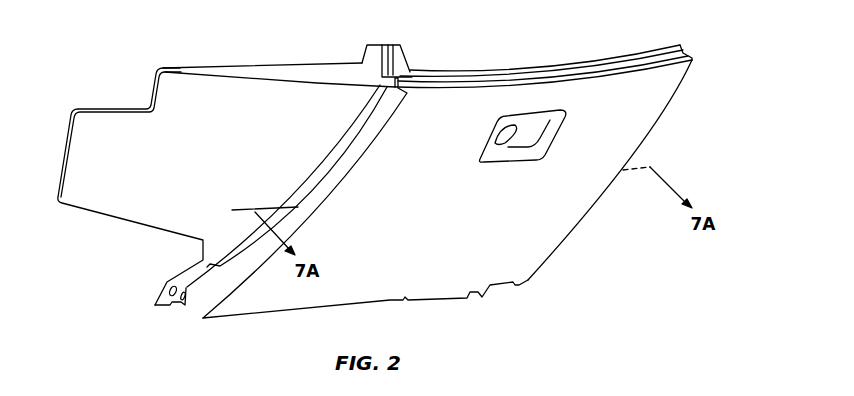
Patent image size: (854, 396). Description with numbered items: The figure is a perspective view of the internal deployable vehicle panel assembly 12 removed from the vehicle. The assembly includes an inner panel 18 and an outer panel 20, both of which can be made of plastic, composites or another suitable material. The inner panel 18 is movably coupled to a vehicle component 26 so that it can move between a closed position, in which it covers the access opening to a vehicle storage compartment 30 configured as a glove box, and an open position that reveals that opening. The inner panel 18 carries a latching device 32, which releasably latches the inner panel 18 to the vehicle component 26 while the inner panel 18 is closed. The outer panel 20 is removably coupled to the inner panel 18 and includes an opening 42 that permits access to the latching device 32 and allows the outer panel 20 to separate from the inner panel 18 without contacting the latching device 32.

The internal deployable vehicle panel assembly 12 is at (660, 156).
The inner panel 18 is at (680, 43).
The outer panel 20 is at (550, 245).
The vehicle component 26 is at (185, 306).
The vehicle storage compartment 30 is at (183, 236).
The latching device 32 is at (515, 128).
The opening 42 is at (490, 166).